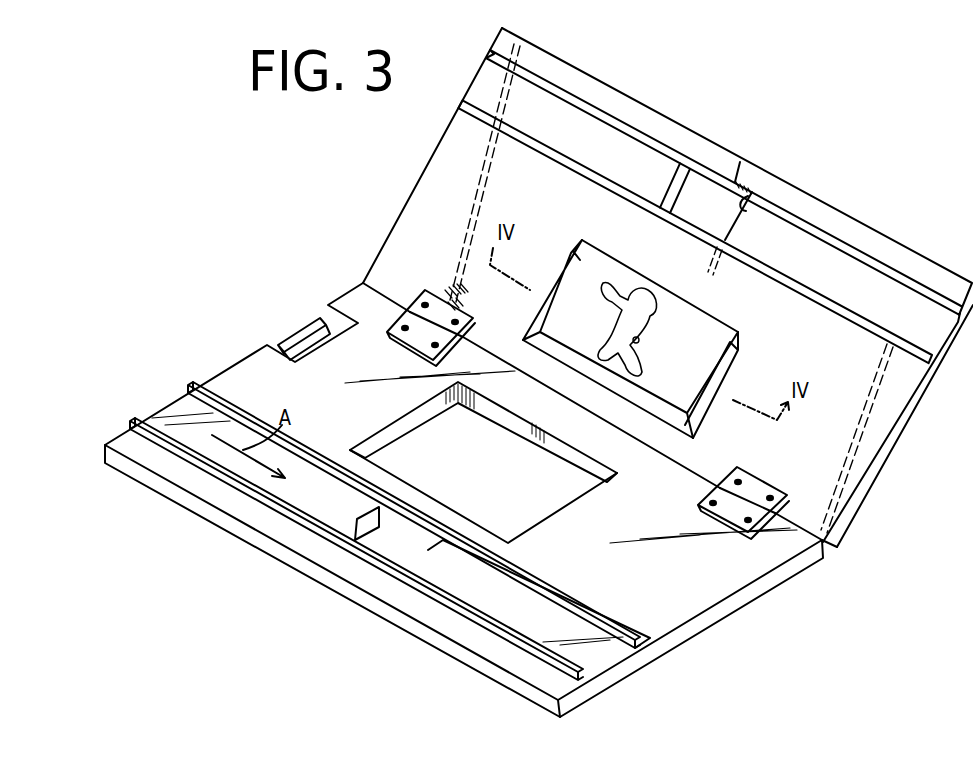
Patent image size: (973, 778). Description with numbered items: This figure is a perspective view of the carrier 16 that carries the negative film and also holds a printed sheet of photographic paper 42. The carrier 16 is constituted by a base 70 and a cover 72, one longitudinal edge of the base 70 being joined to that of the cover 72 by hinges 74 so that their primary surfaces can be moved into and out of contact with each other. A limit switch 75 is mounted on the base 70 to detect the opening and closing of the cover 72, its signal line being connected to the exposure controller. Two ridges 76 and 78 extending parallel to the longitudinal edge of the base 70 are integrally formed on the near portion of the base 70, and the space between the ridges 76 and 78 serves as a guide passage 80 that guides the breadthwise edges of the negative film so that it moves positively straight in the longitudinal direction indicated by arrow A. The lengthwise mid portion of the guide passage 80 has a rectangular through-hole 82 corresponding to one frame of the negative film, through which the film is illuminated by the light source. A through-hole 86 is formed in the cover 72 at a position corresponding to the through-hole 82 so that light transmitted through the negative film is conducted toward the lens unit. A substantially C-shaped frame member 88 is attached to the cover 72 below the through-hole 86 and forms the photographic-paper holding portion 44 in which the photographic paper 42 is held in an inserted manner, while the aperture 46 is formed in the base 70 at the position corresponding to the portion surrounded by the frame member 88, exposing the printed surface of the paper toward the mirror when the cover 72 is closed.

The carrier 16 is at (916, 445).
The photographic paper 42 is at (710, 327).
The photographic-paper holding portion 44 is at (562, 240).
The aperture 46 is at (543, 526).
The base 70 is at (745, 598).
The cover 72 is at (880, 232).
The hinges 74 is at (435, 302).
The limit switch 75 is at (302, 323).
The ridge 76 is at (552, 662).
The ridge 78 is at (637, 627).
The guide passage 80 is at (603, 655).
The through-hole 82 is at (410, 556).
The through-hole 86 is at (748, 192).
The frame member 88 is at (738, 358).